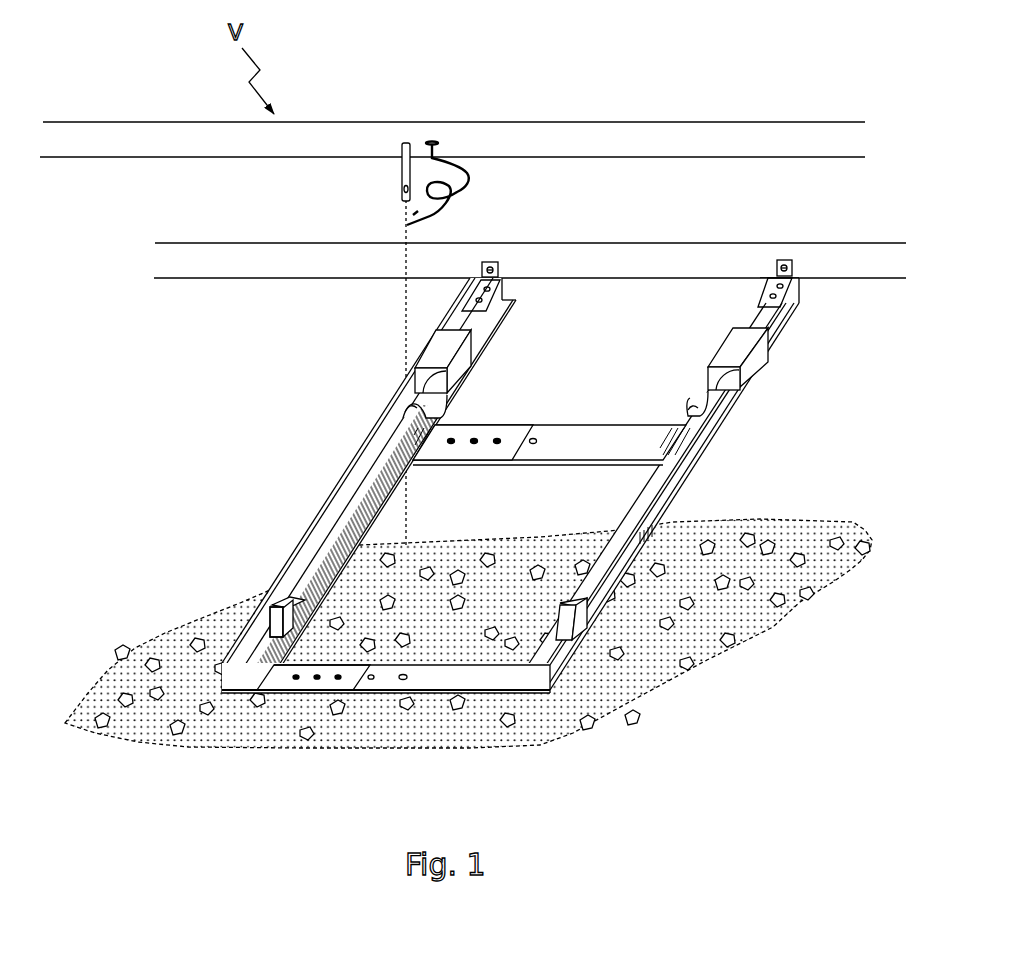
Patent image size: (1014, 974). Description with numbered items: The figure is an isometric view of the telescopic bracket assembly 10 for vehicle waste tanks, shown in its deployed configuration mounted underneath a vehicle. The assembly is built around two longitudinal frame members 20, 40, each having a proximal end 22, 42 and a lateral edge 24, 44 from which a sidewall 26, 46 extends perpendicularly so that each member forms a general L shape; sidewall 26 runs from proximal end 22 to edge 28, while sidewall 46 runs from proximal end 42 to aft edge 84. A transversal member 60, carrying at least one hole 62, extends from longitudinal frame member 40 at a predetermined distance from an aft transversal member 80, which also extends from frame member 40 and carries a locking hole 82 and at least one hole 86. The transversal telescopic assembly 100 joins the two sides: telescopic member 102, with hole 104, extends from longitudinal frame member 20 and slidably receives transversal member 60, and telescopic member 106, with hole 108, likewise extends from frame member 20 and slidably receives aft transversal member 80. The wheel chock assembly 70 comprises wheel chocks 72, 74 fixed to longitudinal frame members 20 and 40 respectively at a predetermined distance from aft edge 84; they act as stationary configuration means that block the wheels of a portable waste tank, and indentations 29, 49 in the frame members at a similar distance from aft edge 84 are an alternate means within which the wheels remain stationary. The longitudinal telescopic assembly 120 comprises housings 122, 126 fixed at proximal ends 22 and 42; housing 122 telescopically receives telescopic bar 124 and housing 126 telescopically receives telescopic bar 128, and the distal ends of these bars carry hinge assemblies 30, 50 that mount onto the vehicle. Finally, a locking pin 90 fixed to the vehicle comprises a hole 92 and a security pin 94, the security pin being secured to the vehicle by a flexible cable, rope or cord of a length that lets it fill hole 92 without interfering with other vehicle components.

The telescopic bracket assembly 10 is at (700, 95).
The longitudinal frame member 20 is at (321, 496).
The proximal end 22 is at (417, 370).
The lateral edge 24 is at (203, 690).
The sidewall 26 is at (374, 443).
The edge 28 is at (248, 690).
The indentation 29 is at (430, 403).
The hinge assembly 30 is at (490, 258).
The longitudinal frame member 40 is at (644, 434).
The proximal end 42 is at (718, 372).
The lateral edge 44 is at (707, 447).
The sidewall 46 is at (662, 510).
The indentation 49 is at (700, 398).
The hinge assembly 50 is at (783, 258).
The transversal member 60 is at (551, 430).
The hole 62 is at (536, 437).
The wheel chock assembly 70 is at (262, 615).
The wheel chock 72 is at (270, 600).
The wheel chock 74 is at (557, 600).
The aft transversal member 80 is at (380, 737).
The locking hole 82 is at (398, 676).
The aft edge 84 is at (460, 694).
The hole 86 is at (370, 683).
The locking pin 90 is at (361, 185).
The hole 92 is at (400, 172).
The security pin 94 is at (460, 198).
The transversal telescopic assembly 100 is at (513, 470).
The telescopic member 102 is at (500, 455).
The hole 104 is at (476, 437).
The telescopic member 106 is at (297, 690).
The hole 108 is at (317, 682).
The longitudinal telescopic assembly 120 is at (349, 339).
The housing 122 is at (430, 347).
The telescopic bar 124 is at (490, 315).
The housing 126 is at (730, 347).
The telescopic bar 128 is at (752, 312).